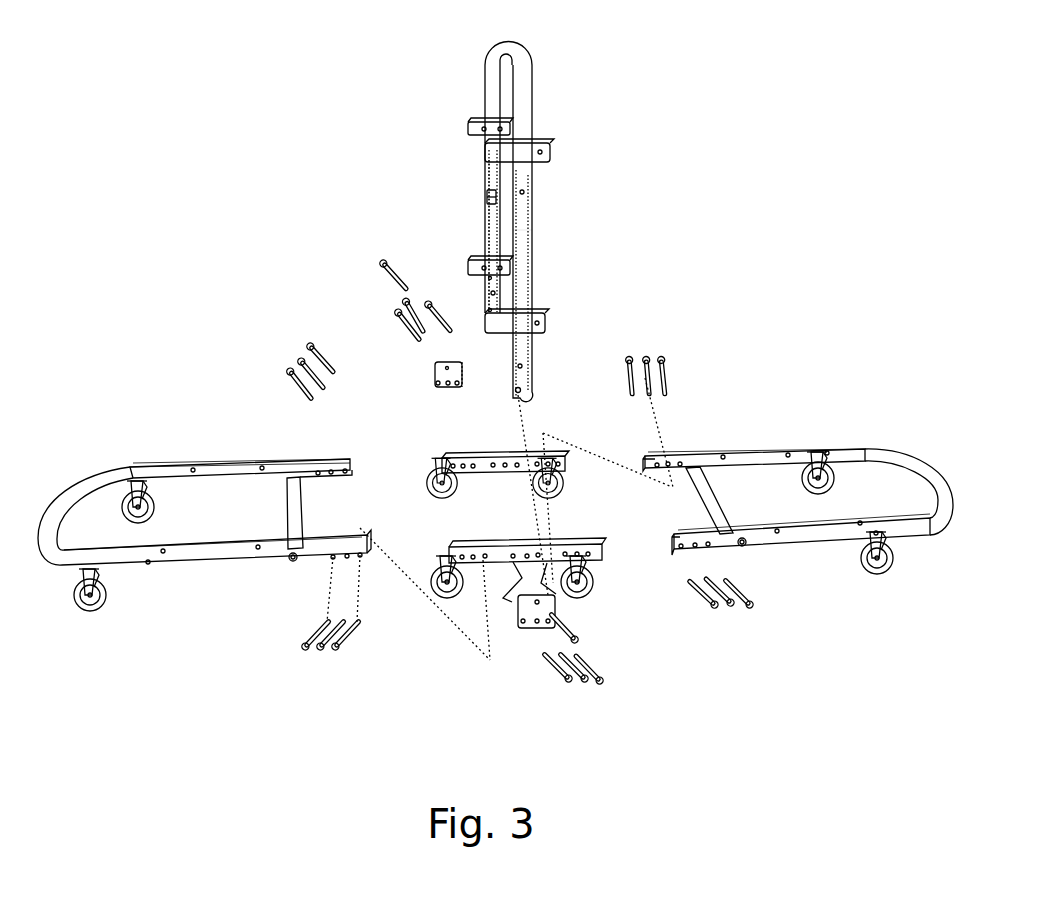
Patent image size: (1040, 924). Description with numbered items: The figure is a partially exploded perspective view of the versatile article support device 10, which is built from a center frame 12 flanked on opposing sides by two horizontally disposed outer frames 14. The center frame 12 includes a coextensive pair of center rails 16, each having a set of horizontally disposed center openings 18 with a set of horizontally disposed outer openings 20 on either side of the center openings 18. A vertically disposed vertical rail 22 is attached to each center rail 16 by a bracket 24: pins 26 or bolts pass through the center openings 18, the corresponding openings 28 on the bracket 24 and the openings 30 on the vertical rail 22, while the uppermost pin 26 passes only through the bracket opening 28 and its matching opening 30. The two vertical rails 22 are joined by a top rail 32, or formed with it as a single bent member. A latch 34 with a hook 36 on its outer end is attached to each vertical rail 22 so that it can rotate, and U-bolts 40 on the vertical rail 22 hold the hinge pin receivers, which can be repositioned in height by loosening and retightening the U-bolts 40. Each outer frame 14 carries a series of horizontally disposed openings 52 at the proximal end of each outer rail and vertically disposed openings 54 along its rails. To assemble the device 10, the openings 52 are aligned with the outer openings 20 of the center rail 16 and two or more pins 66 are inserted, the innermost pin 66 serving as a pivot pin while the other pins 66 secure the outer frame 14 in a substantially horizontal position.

The versatile article support device 10 is at (469, 702).
The center frame 12 is at (536, 195).
The outer frame 14 is at (495, 486).
The center rail 16 is at (522, 454).
The center openings 18 is at (515, 468).
The outer openings 20 is at (473, 555).
The vertical rail 22 is at (522, 228).
The bracket 24 is at (434, 372).
The pins 26 is at (413, 300).
The openings 28 is at (437, 385).
The openings 30 is at (490, 293).
The top rail 32 is at (509, 42).
The latch 34 is at (490, 179).
The hook 36 is at (488, 198).
The U-bolt 40 is at (500, 127).
The horizontally disposed openings 52 is at (347, 469).
The vertically disposed openings 54 is at (195, 466).
The pins 66 is at (335, 358).